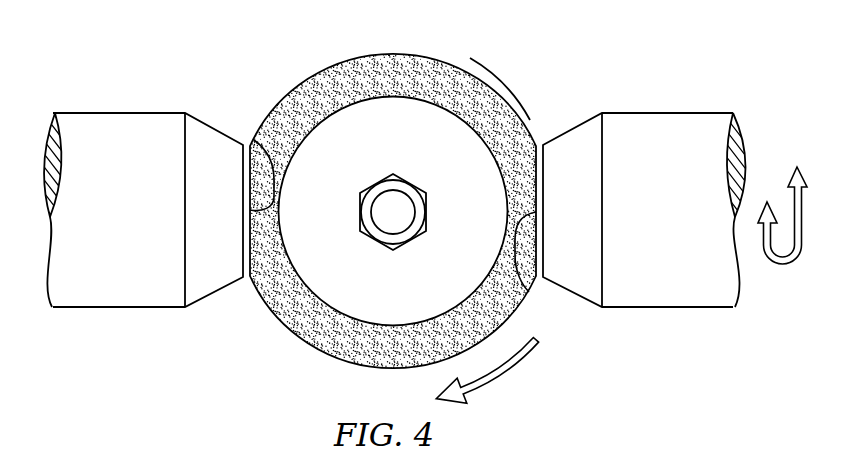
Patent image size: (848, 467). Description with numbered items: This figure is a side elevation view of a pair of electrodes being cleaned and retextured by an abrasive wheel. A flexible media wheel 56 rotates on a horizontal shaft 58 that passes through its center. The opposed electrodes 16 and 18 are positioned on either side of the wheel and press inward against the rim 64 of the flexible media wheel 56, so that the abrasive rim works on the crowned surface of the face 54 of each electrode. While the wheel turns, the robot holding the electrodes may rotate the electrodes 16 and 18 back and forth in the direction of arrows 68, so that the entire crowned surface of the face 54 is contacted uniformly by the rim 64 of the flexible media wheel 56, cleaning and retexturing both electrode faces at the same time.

The electrode 16 is at (137, 130).
The electrode 18 is at (628, 127).
The face 54 is at (261, 134).
The flexible media wheel 56 is at (457, 83).
The horizontal shaft 58 is at (410, 187).
The rim 64 is at (512, 108).
The arrows 68 is at (796, 218).